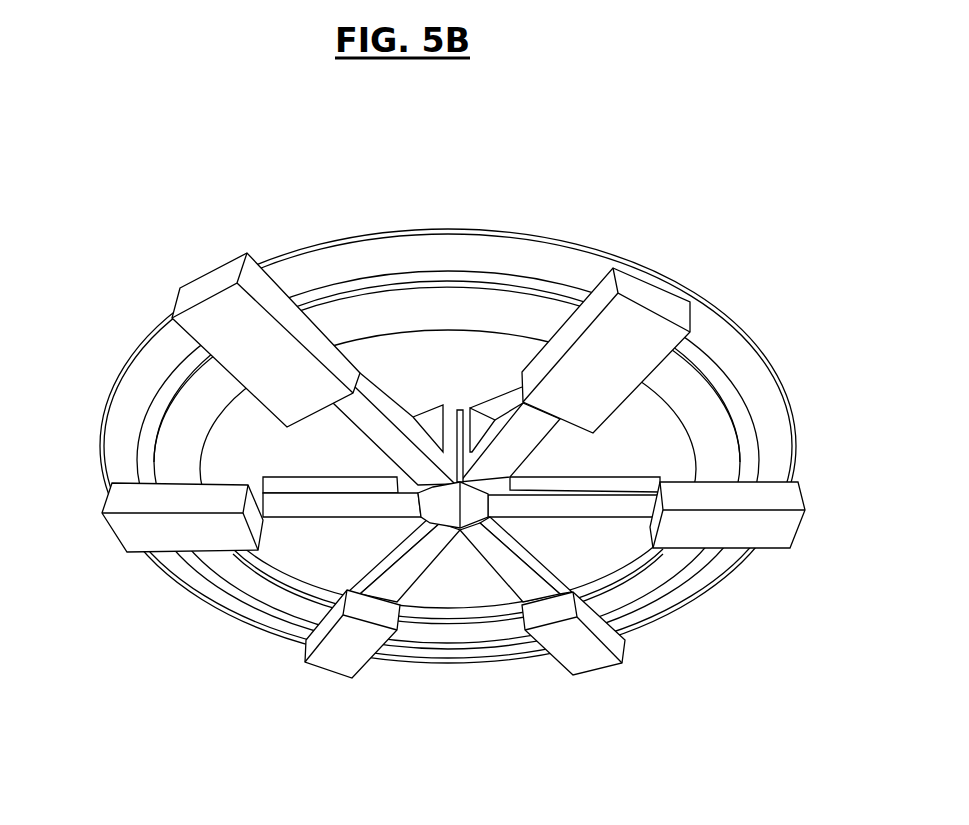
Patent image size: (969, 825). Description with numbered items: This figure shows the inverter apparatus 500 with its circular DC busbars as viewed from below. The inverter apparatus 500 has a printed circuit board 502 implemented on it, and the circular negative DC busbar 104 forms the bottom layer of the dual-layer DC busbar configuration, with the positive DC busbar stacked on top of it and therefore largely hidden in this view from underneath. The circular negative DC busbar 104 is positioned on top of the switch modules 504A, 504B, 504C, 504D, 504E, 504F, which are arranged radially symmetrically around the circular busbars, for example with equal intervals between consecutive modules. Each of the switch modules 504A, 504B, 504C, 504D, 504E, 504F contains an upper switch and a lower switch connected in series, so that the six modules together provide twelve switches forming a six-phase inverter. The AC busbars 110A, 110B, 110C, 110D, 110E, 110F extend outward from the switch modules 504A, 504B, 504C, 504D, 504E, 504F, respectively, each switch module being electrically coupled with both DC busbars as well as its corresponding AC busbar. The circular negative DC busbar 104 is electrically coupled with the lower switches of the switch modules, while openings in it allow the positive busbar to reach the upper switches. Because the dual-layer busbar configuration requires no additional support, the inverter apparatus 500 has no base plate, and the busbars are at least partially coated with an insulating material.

The inverter apparatus 500 is at (236, 170).
The circular negative DC busbar 104 is at (345, 252).
The printed circuit board 502 is at (190, 388).
The AC busbar 110A is at (415, 565).
The AC busbar 110B is at (522, 575).
The AC busbar 110C is at (667, 470).
The AC busbar 110D is at (497, 405).
The AC busbar 110E is at (407, 416).
The AC busbar 110F is at (283, 485).
The switch module 504A is at (327, 665).
The switch module 504B is at (594, 662).
The switch module 504C is at (795, 525).
The switch module 504D is at (655, 302).
The switch module 504E is at (210, 282).
The switch module 504F is at (123, 532).